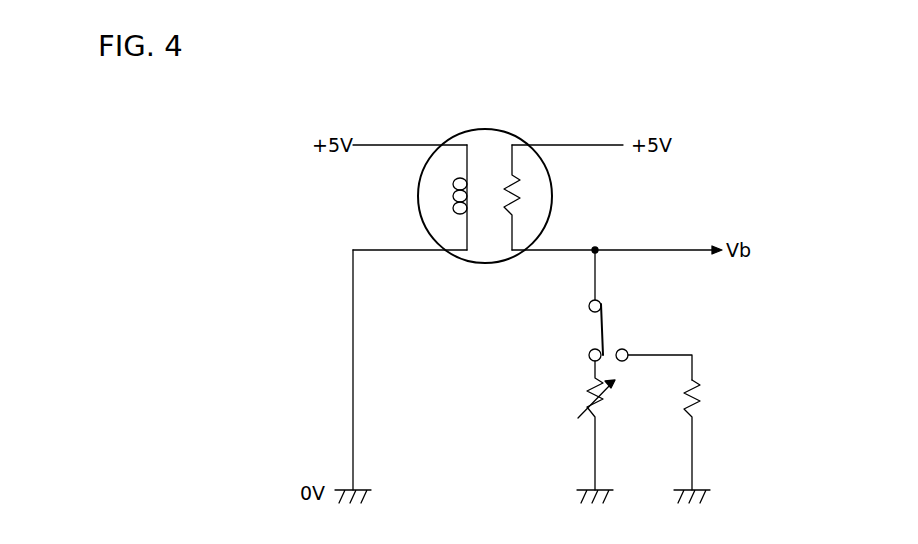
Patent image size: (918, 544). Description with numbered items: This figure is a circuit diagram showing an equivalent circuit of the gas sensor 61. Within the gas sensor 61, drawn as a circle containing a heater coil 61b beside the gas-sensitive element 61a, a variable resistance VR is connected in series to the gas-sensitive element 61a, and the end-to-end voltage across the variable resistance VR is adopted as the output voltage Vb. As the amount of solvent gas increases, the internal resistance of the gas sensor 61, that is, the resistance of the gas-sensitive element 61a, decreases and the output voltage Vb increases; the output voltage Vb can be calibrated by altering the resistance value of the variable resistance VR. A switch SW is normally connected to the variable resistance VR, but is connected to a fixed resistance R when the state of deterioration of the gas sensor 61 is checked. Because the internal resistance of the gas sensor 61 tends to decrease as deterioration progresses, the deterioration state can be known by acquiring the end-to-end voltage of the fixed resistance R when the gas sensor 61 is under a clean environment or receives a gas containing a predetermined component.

The gas sensor 61 is at (516, 137).
The gas-sensitive element 61a is at (518, 185).
The coil of sensor 61b is at (457, 212).
The switch SW is at (603, 330).
The variable resistance VR is at (598, 418).
The fixed resistance R is at (694, 418).